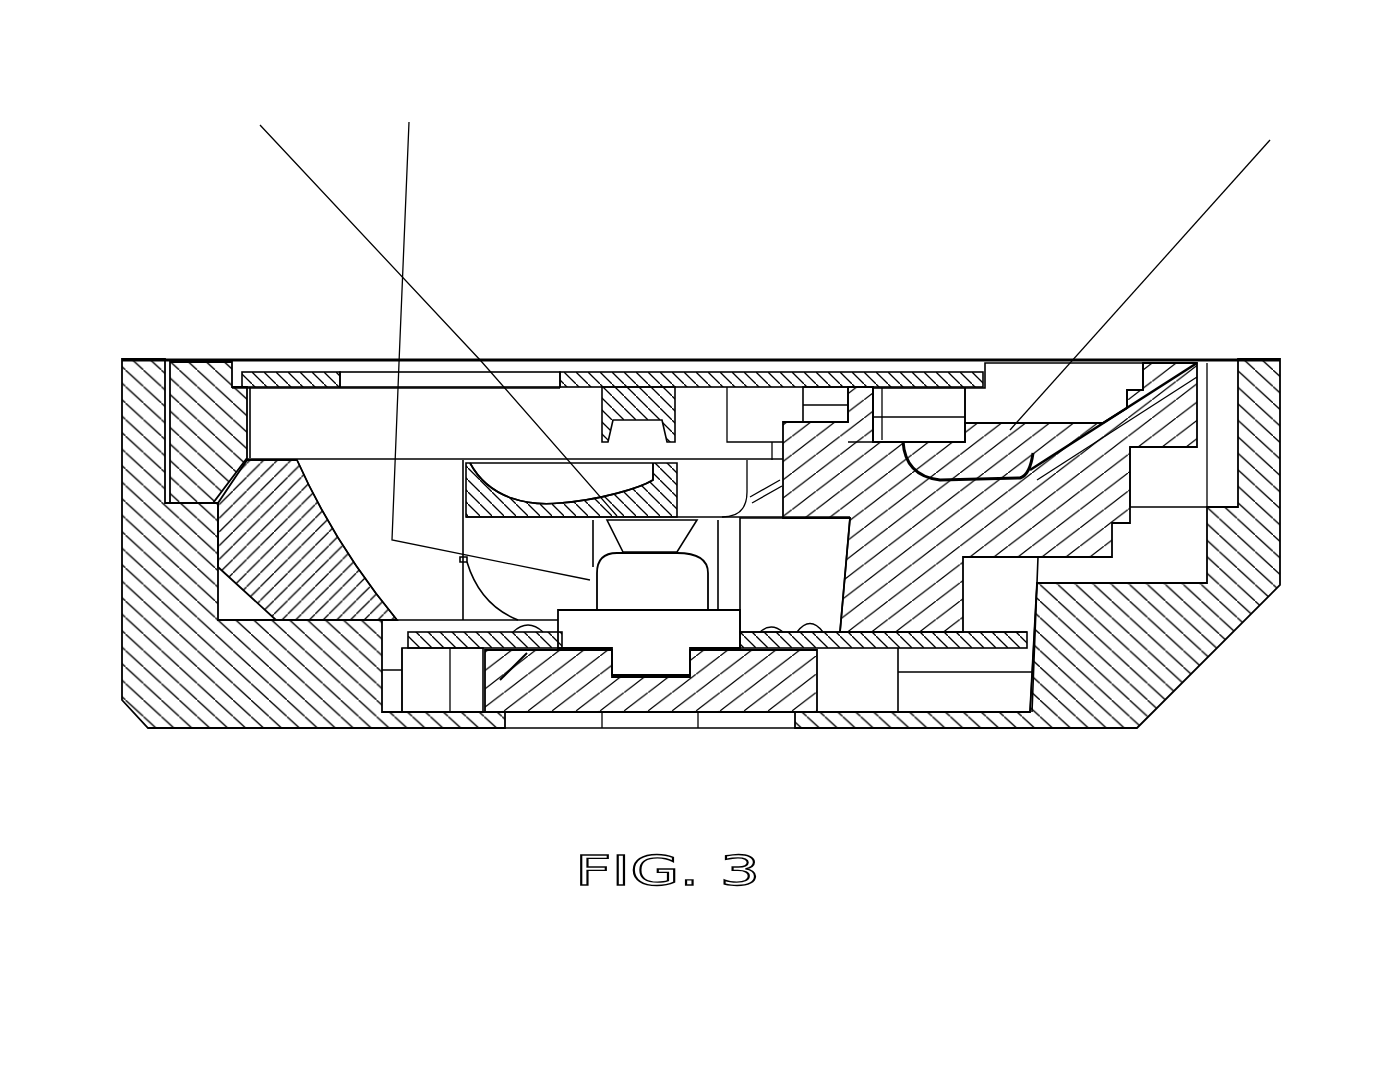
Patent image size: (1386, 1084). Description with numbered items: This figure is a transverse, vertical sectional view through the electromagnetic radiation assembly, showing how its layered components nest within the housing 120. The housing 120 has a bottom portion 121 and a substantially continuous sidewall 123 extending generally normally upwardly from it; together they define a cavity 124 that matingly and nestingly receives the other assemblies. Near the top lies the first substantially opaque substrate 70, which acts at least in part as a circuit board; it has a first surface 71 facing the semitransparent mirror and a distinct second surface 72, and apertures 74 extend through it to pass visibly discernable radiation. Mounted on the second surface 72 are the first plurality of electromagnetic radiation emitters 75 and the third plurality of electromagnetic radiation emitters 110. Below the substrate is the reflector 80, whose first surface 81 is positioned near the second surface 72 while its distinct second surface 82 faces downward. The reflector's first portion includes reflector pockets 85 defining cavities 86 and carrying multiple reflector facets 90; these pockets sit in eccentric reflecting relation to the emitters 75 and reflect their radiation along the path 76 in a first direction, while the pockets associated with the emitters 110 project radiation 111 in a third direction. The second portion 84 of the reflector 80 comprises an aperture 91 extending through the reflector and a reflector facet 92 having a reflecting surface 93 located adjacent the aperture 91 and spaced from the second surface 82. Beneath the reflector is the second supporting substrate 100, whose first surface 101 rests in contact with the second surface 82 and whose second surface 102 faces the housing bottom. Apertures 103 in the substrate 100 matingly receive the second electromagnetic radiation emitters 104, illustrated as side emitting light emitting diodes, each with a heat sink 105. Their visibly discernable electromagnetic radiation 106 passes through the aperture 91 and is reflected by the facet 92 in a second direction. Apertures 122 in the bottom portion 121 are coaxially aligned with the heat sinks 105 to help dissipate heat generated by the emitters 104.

The first substantially opaque substrate 70 is at (770, 360).
The first surface 71 is at (866, 392).
The second surface 72 is at (318, 392).
The apertures 74 is at (532, 382).
The first plurality of electromagnetic radiation emitters 75 is at (755, 405).
The path of visibly discernable electromagnetic radiation 76 is at (328, 197).
The reflector 80 is at (1210, 462).
The first surface 81 is at (1113, 420).
The second surface 82 is at (818, 520).
The second portion 84 is at (313, 517).
The reflector pockets 85 is at (528, 477).
The cavities 86 is at (567, 483).
The reflector facets 90 is at (1033, 450).
The aperture 91 is at (322, 455).
The reflector facet 92 is at (428, 530).
The reflecting surface 93 is at (450, 537).
The second supporting substrate 100 is at (852, 652).
The first surface 101 is at (770, 635).
The second surface 102 is at (1017, 668).
The apertures 103 is at (476, 650).
The second electromagnetic radiation emitters 104 is at (653, 592).
The heat sink 105 is at (708, 690).
The visibly discernable electromagnetic radiation 106 is at (407, 187).
The third plurality of electromagnetic radiation emitters 110 is at (940, 408).
The electromagnetic radiation 111 is at (1203, 210).
The housing 120 is at (1290, 523).
The bottom portion 121 is at (1033, 713).
The apertures 122 is at (568, 716).
The sidewall 123 is at (1120, 468).
The cavity 124 is at (237, 615).